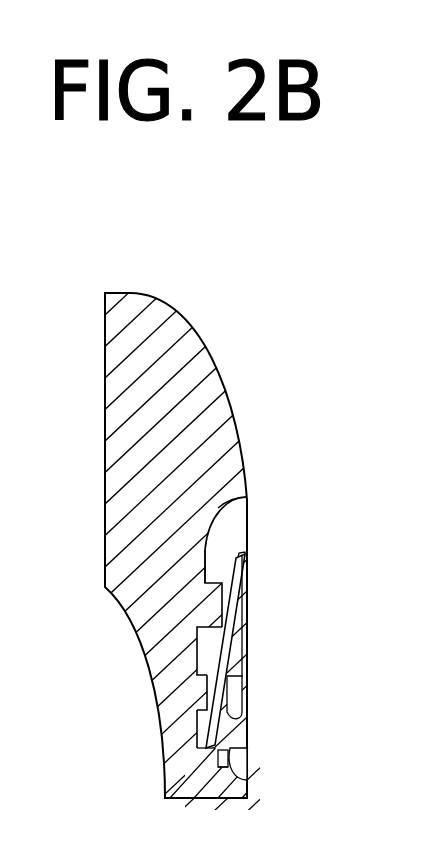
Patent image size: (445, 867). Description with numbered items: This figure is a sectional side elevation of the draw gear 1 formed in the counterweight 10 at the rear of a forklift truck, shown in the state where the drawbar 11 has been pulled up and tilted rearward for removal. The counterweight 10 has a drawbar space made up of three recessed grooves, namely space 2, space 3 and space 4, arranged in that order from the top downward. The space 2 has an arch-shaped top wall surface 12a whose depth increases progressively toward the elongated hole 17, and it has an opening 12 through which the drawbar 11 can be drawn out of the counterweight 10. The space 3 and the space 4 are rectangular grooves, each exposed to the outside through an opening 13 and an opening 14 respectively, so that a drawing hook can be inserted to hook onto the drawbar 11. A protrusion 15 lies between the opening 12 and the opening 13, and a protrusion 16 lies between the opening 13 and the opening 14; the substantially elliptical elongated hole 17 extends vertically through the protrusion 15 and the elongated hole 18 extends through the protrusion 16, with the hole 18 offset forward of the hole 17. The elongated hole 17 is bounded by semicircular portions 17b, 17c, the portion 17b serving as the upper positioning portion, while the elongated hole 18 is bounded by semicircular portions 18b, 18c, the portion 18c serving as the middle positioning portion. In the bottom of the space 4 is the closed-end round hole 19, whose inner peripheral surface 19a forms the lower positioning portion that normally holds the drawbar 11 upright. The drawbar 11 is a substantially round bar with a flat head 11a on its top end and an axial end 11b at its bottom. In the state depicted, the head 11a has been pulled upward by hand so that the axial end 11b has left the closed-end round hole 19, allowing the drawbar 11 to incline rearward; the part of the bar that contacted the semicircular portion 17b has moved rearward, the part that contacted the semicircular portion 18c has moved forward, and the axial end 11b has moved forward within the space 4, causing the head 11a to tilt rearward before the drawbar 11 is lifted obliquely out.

The draw gear 1 is at (376, 492).
The space 2 is at (205, 550).
The space 3 is at (205, 648).
The space 4 is at (197, 722).
The counterweight 10 is at (195, 317).
The drawbar 11 is at (247, 650).
The head 11a is at (247, 555).
The axial end 11b is at (205, 748).
The opening 12 is at (247, 518).
The top wall surface 12a is at (247, 503).
The opening 13 is at (247, 672).
The opening 14 is at (248, 745).
The protrusion 15 is at (247, 600).
The protrusion 16 is at (247, 698).
The elongated hole 17 is at (230, 603).
The semicircular portion 17b is at (247, 535).
The semicircular portion 17c is at (247, 627).
The elongated hole 18 is at (207, 690).
The semicircular portion 18b is at (200, 708).
The semicircular portion 18c is at (248, 722).
The closed-end round hole 19 is at (238, 755).
The inner peripheral surface 19a is at (232, 765).